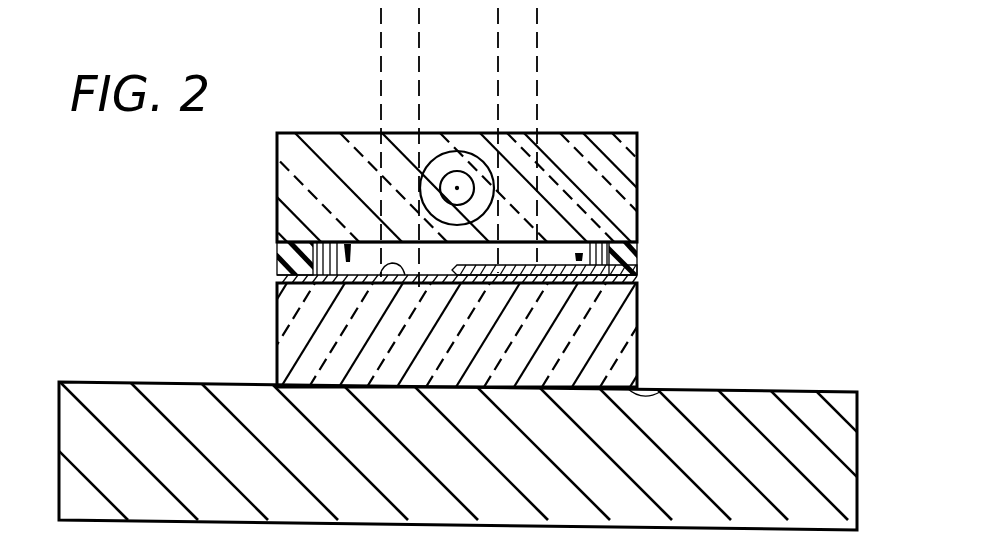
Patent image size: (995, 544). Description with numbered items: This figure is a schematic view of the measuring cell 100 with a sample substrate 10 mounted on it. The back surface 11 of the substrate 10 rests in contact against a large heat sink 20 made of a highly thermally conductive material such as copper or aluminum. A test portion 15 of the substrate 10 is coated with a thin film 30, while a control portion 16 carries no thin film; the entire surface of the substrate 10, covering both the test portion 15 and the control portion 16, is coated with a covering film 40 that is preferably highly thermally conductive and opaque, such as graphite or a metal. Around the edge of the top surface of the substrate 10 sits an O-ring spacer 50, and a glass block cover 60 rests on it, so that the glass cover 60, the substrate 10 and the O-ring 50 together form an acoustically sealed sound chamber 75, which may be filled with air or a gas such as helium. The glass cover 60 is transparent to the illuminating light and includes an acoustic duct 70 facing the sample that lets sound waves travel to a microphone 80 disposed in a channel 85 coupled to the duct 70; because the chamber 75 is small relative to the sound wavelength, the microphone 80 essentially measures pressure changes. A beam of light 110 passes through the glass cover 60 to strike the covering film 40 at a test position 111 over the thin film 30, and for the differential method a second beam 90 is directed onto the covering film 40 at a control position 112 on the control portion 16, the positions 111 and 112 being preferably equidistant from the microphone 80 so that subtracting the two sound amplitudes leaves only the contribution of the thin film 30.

The sample substrate 10 is at (637, 323).
The back surface 11 is at (660, 392).
The test portion 15 is at (637, 240).
The control portion 16 is at (347, 244).
The heat sink 20 is at (752, 412).
The thin film 30 is at (637, 283).
The covering film 40 is at (637, 274).
The O-ring spacer 50 is at (277, 255).
The glass block cover 60 is at (637, 172).
The acoustic duct 70 is at (500, 226).
The sound chamber 75 is at (412, 288).
The microphone 80 is at (462, 170).
The channel 85 is at (457, 184).
The beam 90 is at (396, 49).
The measuring cell 100 is at (233, 203).
The beam of light 110 is at (523, 63).
The test position 111 is at (527, 263).
The control position 112 is at (430, 287).